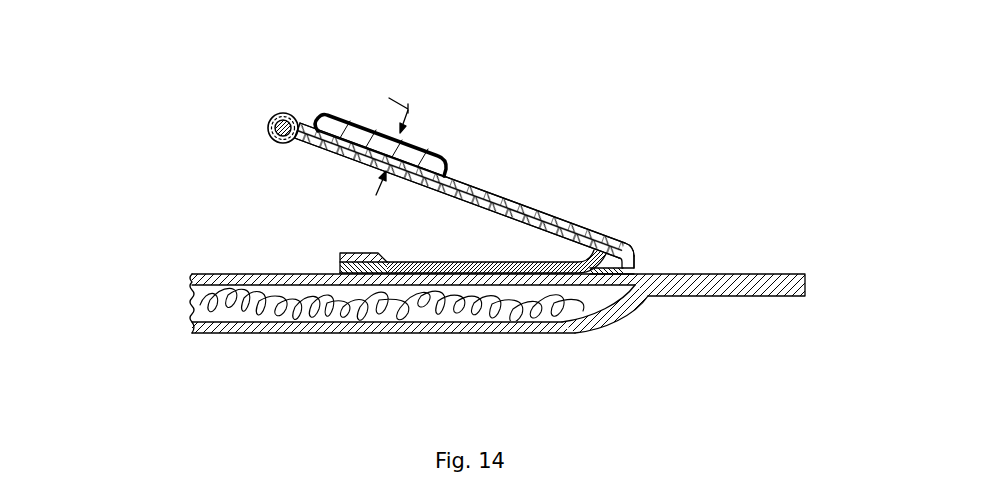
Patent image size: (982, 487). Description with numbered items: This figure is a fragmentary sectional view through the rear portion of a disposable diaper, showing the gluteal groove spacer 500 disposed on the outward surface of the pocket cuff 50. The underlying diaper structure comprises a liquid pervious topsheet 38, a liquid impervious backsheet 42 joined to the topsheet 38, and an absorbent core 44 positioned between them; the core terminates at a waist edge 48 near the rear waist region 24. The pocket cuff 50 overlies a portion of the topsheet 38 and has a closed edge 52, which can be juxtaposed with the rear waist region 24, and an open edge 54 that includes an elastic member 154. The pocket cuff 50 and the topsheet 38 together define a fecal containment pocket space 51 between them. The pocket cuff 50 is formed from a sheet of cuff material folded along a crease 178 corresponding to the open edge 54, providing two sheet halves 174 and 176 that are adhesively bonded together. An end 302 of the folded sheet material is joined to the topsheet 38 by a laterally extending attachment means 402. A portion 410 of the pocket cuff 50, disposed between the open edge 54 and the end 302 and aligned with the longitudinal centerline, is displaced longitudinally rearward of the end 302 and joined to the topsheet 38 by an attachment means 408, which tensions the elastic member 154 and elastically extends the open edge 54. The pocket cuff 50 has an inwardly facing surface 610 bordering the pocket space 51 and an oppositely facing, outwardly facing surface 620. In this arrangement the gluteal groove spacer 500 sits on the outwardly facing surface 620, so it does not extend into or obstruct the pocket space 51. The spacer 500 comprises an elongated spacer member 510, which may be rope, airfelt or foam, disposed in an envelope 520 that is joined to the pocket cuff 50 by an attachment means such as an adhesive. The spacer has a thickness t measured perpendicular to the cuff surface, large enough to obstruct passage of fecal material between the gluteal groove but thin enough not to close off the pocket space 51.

The rear waist region 24 is at (763, 258).
The topsheet 38 is at (192, 280).
The backsheet 42 is at (240, 335).
The absorbent core 44 is at (210, 307).
The waist edge of absorbent core 48 is at (585, 330).
The pocket cuff 50 is at (550, 184).
The pocket space 51 is at (490, 192).
The closed edge 52 is at (647, 237).
The open edge 54 is at (275, 113).
The elastic member 154 is at (270, 141).
The sheet half 174 is at (490, 192).
The sheet half 176 is at (445, 205).
The crease 178 is at (250, 122).
The end of folded pocket sheet material 302 is at (329, 248).
The laterally extending attachment means 402 is at (340, 270).
The attachment means 408 is at (632, 265).
The portion of pocket cuff 410 is at (630, 230).
The gluteal groove spacer 500 is at (437, 109).
The elongated spacer member 510 is at (345, 133).
The envelope 520 is at (359, 127).
The inwardly facing surface 610 is at (450, 202).
The outwardly facing surface 620 is at (452, 222).